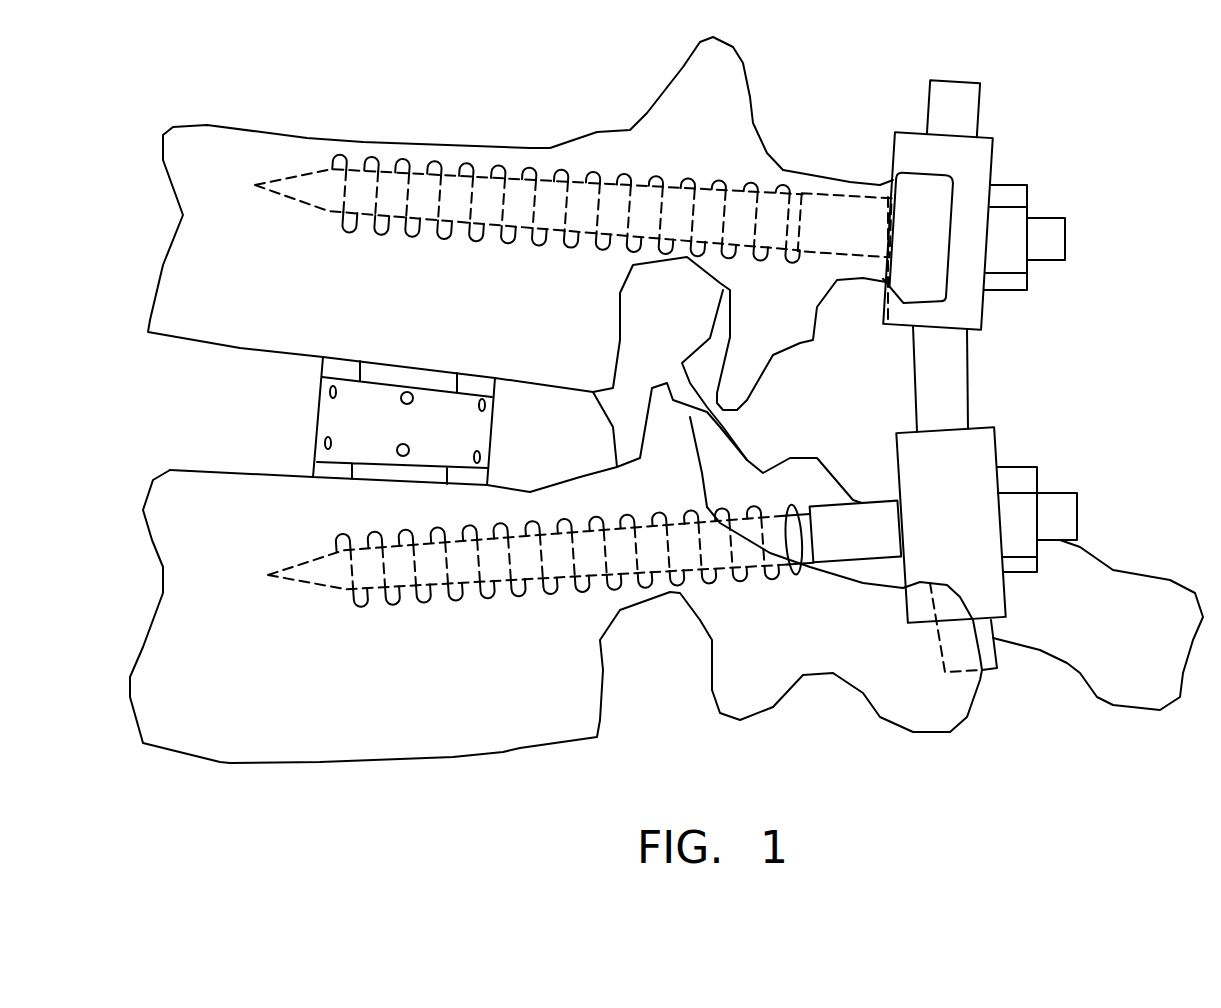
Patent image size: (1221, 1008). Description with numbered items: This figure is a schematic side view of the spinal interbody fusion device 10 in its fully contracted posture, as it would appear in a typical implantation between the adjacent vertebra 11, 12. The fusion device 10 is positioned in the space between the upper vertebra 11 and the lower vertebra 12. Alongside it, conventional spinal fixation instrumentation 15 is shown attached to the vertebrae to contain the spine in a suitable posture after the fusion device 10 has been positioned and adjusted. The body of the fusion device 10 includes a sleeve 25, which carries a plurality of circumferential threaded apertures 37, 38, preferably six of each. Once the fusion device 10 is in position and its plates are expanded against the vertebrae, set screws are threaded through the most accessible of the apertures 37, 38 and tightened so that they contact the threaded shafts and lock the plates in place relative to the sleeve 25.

The spinal interbody fusion device 10 is at (639, 375).
The vertebra 11 is at (210, 160).
The vertebra 12 is at (192, 713).
The spinal fixation instrumentation 15 is at (1047, 160).
The sleeve 25 is at (436, 421).
The threaded aperture 37 is at (398, 404).
The threaded aperture 38 is at (415, 445).